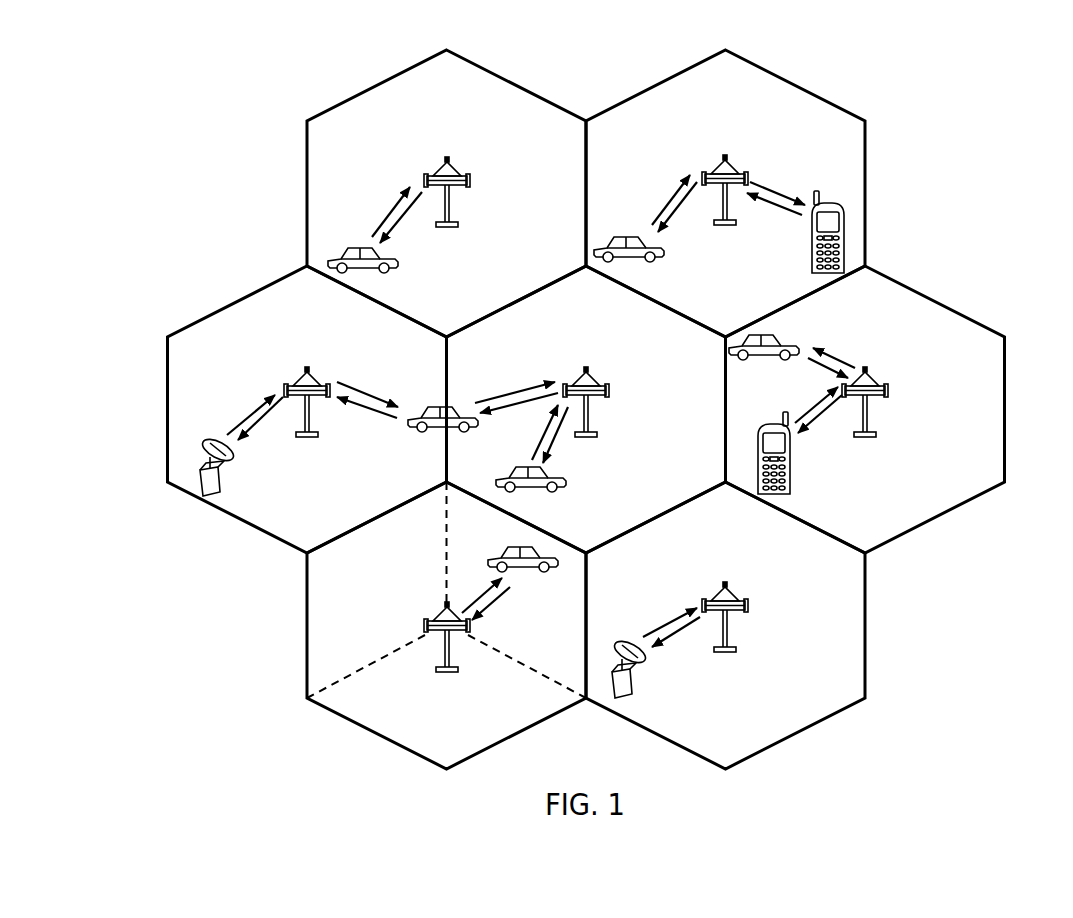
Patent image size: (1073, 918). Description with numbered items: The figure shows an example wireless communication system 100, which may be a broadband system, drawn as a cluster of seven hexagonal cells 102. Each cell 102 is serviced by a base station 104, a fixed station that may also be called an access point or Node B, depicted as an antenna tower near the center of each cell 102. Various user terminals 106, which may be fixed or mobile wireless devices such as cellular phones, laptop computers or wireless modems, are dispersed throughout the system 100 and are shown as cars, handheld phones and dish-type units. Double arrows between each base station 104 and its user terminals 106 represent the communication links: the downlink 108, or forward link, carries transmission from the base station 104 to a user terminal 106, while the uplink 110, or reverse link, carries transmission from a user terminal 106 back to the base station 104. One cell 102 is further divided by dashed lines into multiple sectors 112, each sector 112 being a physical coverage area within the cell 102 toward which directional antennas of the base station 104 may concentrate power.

The wireless communication system 100 is at (990, 127).
The cell 102 is at (385, 81).
The base station 104 is at (447, 159).
The user terminal 106 is at (398, 266).
The downlink 108 is at (397, 230).
The uplink 110 is at (393, 206).
The sector 112 is at (495, 728).